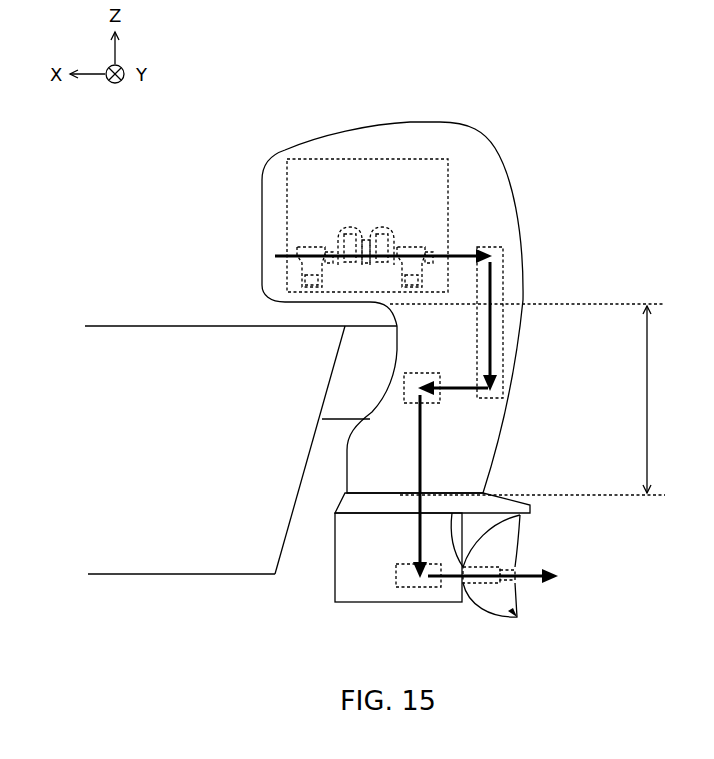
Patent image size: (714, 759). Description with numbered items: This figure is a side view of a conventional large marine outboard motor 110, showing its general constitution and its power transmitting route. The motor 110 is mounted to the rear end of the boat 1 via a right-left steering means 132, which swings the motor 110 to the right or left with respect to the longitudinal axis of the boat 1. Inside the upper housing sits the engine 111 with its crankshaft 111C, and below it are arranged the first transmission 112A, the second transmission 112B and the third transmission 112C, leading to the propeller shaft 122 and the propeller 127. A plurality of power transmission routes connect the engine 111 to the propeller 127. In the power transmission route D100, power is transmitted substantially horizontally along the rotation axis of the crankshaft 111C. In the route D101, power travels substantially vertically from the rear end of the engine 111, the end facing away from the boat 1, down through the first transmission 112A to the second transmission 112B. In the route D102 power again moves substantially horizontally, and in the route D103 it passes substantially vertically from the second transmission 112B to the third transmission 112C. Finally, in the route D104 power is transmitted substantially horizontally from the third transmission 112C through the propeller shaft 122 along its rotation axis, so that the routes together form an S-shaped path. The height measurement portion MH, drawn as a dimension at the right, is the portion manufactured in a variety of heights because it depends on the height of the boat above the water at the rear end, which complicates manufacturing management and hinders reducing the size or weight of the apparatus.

The boat 1 is at (143, 297).
The large marine outboard motor 110 is at (505, 128).
The engine 111 is at (368, 152).
The crankshaft 111C is at (388, 220).
The first transmission 112A is at (508, 290).
The second transmission 112B is at (423, 366).
The third transmission 112C is at (394, 578).
The propeller shaft 122 is at (457, 584).
The propeller 127 is at (520, 545).
The right-left steering means 132 is at (331, 430).
The power transmission route D100 is at (340, 250).
The power transmission route D101 is at (493, 328).
The power transmission route D102 is at (460, 395).
The power transmission route D103 is at (418, 472).
The power transmission route D104 is at (527, 582).
The height measurement portion MH is at (535, 399).